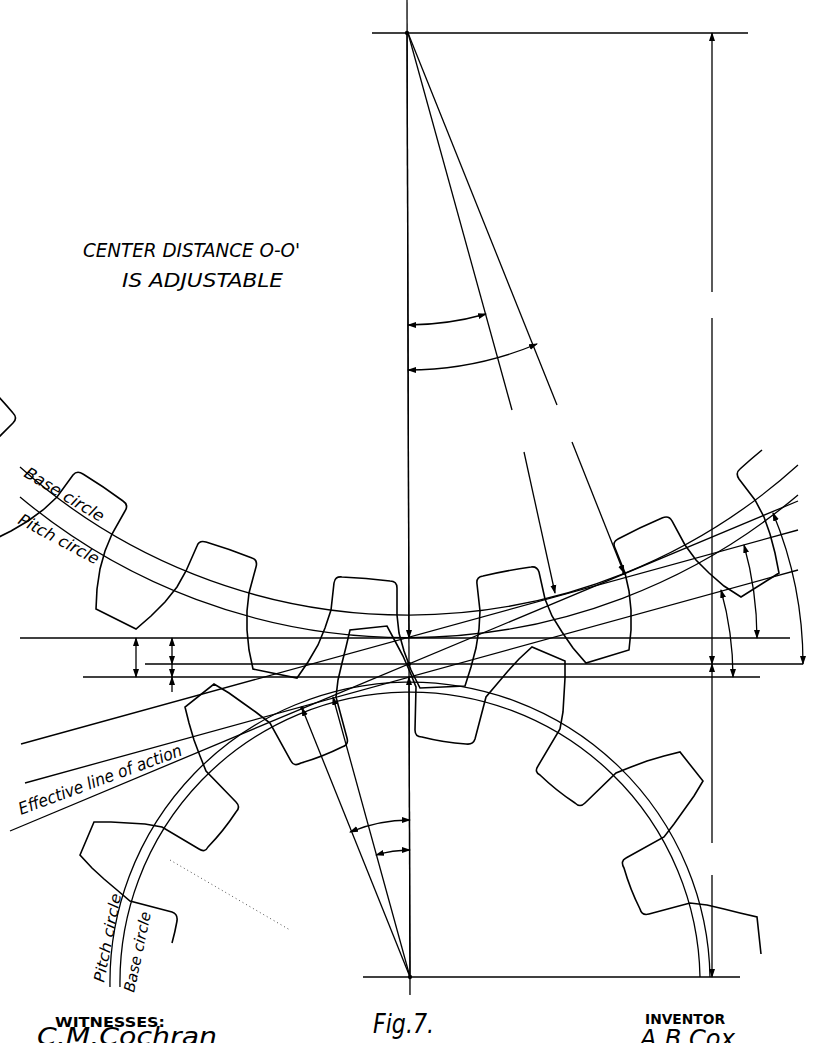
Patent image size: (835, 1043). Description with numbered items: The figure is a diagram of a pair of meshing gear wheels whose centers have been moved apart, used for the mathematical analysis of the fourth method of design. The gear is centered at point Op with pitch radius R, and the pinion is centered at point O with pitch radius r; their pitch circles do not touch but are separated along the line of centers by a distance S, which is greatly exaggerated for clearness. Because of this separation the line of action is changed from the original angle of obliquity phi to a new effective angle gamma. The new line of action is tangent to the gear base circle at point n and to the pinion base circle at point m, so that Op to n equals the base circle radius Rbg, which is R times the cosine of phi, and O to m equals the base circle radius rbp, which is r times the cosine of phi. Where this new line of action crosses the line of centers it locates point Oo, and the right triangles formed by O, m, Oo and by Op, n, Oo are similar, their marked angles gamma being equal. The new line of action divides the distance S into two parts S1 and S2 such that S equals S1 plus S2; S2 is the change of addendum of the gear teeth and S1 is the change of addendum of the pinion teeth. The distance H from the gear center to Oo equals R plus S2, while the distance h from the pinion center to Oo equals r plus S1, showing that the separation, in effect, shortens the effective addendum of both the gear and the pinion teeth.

The center of gear Op is at (560, 21).
The center of pinion O is at (551, 967).
The pitch point on line of action Oo is at (409, 664).
The effective gear radius H is at (710, 348).
The effective pinion radius h is at (710, 820).
The pitch radius of gear R is at (406, 335).
The pitch radius of pinion r is at (408, 827).
The base circle radius of gear Rbg is at (409, 324).
The base circle radius of pinion rbp is at (410, 839).
The distance between pitch circles S is at (131, 657).
The change of addendum of pinion teeth S1 is at (178, 678).
The change of addendum of gear teeth S2 is at (180, 651).
The tangent point on pinion base circle m is at (303, 710).
The tangent point on gear base circle n is at (623, 575).
The angle of line of action phi is at (567, 585).
The effective angle of line of action gamma is at (576, 588).